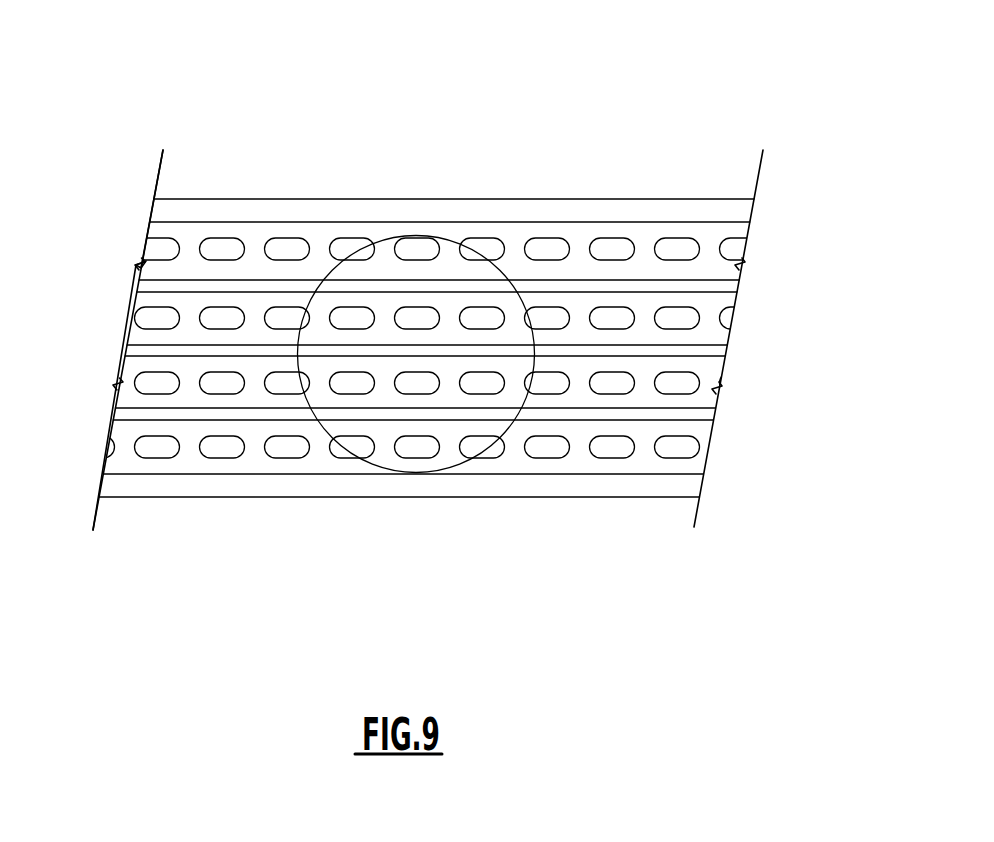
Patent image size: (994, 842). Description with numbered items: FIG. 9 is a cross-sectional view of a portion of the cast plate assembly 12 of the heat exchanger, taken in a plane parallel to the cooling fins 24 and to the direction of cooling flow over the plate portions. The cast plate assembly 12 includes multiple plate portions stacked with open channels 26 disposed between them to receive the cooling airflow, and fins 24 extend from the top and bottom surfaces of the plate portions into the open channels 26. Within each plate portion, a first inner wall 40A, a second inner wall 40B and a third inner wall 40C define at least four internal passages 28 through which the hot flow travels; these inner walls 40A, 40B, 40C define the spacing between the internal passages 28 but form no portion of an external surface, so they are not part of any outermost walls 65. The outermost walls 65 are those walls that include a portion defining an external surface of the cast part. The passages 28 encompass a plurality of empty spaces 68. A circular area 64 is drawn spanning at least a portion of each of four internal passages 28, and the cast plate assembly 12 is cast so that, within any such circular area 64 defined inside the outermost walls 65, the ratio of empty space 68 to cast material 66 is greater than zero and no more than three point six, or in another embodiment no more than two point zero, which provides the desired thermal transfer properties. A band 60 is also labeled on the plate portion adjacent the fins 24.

The cast plate assembly 12 is at (762, 72).
The fins 24 is at (469, 213).
The open channels 26 is at (126, 281).
The internal passages 28 is at (340, 315).
The first inner wall 40A is at (322, 318).
The second inner wall 40B is at (385, 315).
The third inner wall 40C is at (450, 312).
The band 60 is at (563, 230).
The circular area 64 is at (491, 466).
The outermost walls 65 is at (191, 211).
The cast material 66 is at (316, 216).
The empty spaces 68 is at (385, 218).